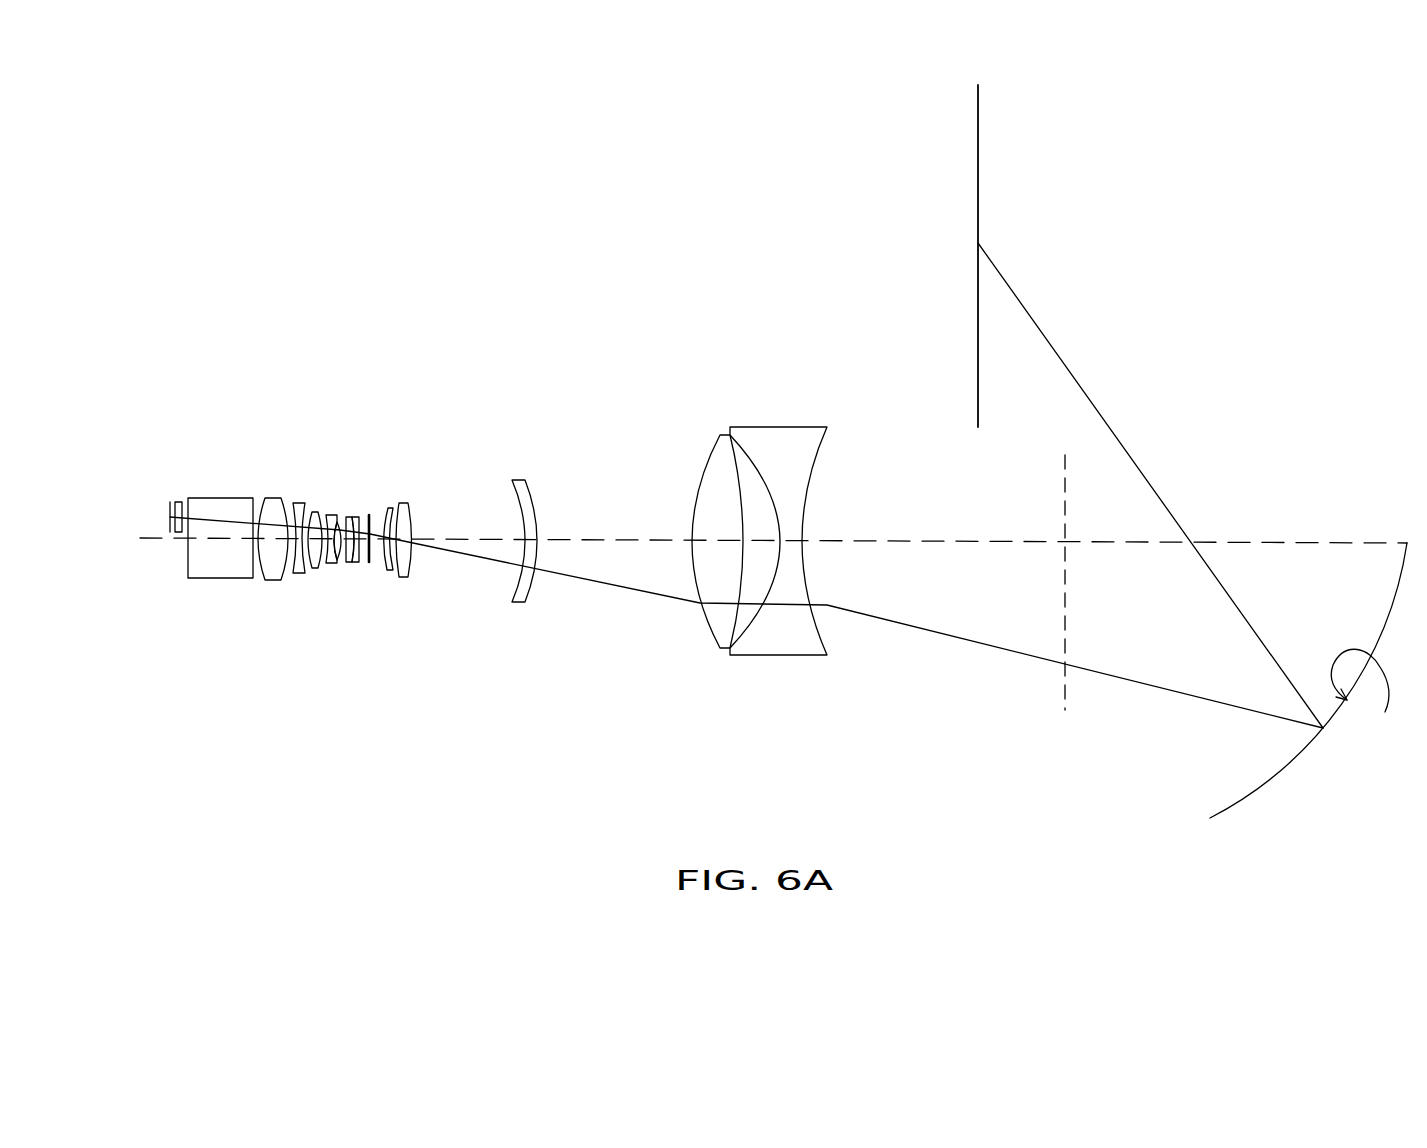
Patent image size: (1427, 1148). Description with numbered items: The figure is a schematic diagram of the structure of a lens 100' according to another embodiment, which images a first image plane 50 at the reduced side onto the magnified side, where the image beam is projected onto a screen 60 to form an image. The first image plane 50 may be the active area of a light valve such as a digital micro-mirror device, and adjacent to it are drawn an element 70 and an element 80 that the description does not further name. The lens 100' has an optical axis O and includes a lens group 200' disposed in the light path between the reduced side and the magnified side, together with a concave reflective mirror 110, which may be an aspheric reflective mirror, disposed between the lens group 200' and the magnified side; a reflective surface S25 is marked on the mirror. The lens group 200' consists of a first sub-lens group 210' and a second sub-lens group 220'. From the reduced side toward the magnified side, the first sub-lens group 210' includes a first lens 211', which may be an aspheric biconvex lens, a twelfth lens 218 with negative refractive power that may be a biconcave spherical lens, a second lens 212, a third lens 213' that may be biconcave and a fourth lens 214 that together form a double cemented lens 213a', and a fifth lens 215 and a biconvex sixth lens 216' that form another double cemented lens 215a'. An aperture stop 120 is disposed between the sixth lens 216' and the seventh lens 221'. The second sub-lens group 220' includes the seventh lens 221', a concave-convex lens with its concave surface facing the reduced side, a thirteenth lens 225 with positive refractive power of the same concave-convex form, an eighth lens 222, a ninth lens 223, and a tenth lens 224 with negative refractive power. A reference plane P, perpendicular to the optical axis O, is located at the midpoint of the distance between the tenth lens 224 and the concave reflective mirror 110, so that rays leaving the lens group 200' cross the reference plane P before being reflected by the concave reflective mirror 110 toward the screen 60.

The first image plane 50 is at (170, 502).
The cover glass 70 is at (179, 500).
The prism 80 is at (219, 505).
The aperture stop 120 is at (366, 515).
The lens group 200' is at (487, 519).
The first sub-lens group 210' is at (291, 639).
The first lens 211' is at (199, 611).
The twelfth lens 218 is at (297, 573).
The second lens 212 is at (316, 566).
The double cemented lens 213a' is at (309, 619).
The third lens 213' is at (302, 595).
The fourth lens 214 is at (346, 560).
The double cemented lens 215a' is at (409, 620).
The fifth lens 215 is at (352, 566).
The sixth lens 216' is at (412, 596).
The second sub-lens group 220' is at (605, 470).
The seventh lens 221' is at (417, 455).
The thirteenth lens 225 is at (408, 520).
The eighth lens 222 is at (525, 497).
The ninth lens 223 is at (705, 483).
The tenth lens 224 is at (783, 445).
The screen 60 is at (978, 157).
The concave reflective mirror 110 is at (1297, 758).
The reflective surface S25 is at (1369, 694).
The optical axis O is at (1282, 543).
The reference plane P is at (1065, 602).
The lens 100' is at (750, 495).